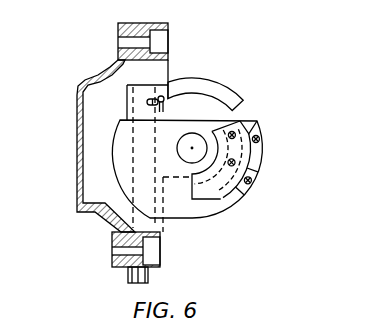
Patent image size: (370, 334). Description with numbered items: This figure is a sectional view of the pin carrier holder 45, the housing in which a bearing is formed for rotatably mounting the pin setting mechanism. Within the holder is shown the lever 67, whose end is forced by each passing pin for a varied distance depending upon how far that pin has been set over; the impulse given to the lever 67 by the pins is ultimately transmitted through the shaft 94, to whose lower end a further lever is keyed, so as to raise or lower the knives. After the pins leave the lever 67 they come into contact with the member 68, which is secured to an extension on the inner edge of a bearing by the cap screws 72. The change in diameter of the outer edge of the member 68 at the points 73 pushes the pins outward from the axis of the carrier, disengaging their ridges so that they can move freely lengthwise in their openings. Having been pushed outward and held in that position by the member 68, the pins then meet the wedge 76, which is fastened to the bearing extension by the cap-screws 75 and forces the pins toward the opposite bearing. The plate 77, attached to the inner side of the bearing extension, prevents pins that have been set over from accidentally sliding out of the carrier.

The pin carrier holder 45 is at (76, 136).
The lever 67 is at (214, 91).
The member 68 is at (223, 198).
The cap screws 72 is at (240, 121).
The points 73 is at (257, 124).
The cap-screws 75 is at (259, 141).
The wedge 76 is at (259, 170).
The plate 77 is at (176, 219).
The shaft 94 is at (149, 278).